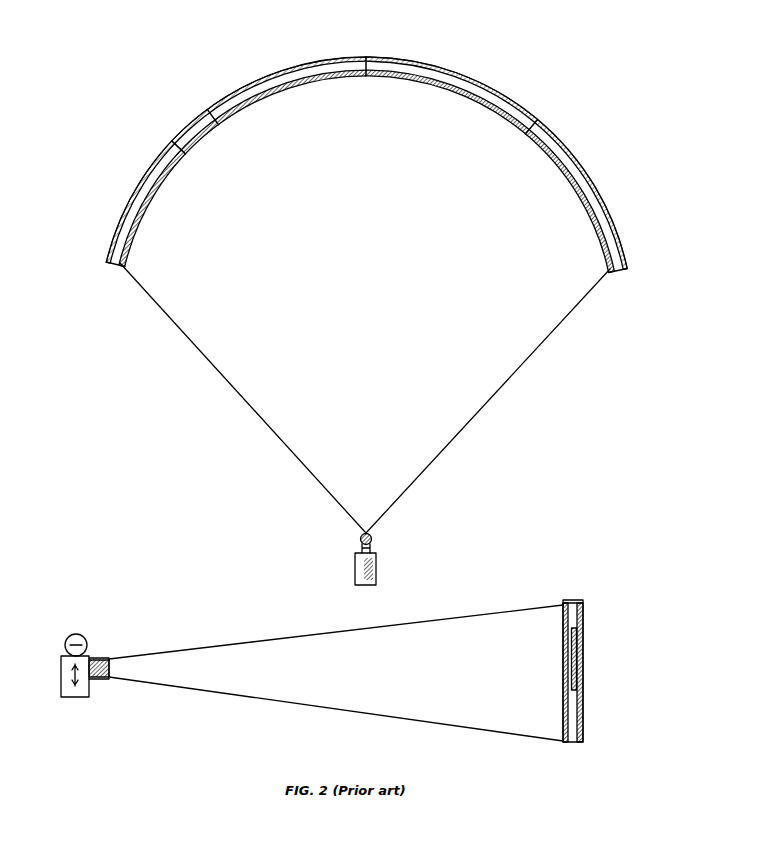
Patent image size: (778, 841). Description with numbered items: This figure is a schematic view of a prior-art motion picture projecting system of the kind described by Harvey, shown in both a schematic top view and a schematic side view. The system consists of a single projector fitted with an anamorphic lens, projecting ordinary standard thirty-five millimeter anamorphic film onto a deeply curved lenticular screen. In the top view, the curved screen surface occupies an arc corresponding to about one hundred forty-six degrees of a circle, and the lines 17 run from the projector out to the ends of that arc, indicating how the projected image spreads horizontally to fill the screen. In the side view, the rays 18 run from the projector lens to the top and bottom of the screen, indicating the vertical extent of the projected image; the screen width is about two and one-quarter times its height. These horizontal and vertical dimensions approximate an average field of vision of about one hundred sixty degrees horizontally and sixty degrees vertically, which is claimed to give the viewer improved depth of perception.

The field of view boundary lines 17 is at (257, 420).
The projection rays 18 is at (262, 640).